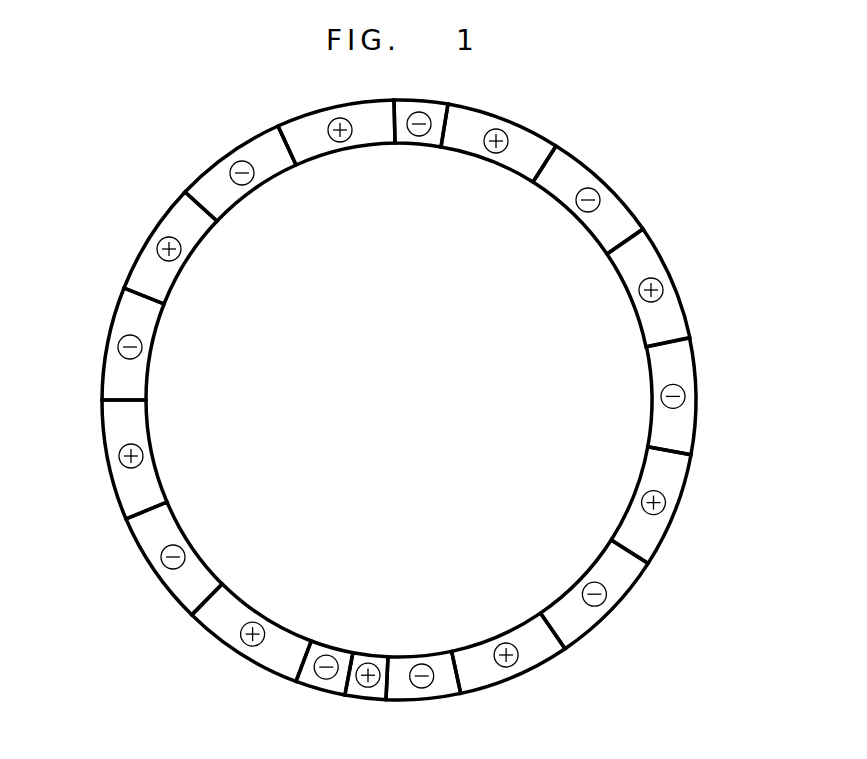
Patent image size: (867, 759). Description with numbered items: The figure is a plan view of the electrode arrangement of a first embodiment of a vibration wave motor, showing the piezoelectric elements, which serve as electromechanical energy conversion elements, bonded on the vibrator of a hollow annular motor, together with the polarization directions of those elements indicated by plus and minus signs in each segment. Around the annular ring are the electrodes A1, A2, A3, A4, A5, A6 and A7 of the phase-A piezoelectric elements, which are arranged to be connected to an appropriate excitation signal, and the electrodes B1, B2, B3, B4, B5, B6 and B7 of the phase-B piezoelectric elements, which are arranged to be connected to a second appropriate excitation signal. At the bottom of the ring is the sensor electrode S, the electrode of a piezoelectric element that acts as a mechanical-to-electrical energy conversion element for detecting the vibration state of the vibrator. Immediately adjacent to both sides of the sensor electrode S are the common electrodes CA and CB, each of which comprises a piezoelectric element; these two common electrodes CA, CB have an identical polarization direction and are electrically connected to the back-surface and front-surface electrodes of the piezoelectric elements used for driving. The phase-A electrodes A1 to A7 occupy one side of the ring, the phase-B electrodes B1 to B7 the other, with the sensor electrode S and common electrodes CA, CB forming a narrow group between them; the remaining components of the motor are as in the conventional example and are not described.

The electrode of phase-A piezoelectric element A1 is at (502, 163).
The electrode of phase-A piezoelectric element A2 is at (592, 217).
The electrode of phase-A piezoelectric element A3 is at (623, 270).
The electrode of phase-A piezoelectric element A4 is at (653, 372).
The electrode of phase-A piezoelectric element A5 is at (648, 472).
The electrode of phase-A piezoelectric element A6 is at (565, 603).
The electrode of phase-A piezoelectric element A7 is at (483, 648).
The electrode of phase-B piezoelectric element B1 is at (315, 152).
The electrode of phase-B piezoelectric element B2 is at (230, 198).
The electrode of phase-B piezoelectric element B3 is at (165, 280).
The electrode of phase-B piezoelectric element B4 is at (137, 373).
The electrode of phase-B piezoelectric element B5 is at (150, 480).
The electrode of phase-B piezoelectric element B6 is at (177, 532).
The electrode of phase-B piezoelectric element B7 is at (245, 612).
The common electrode CA is at (442, 650).
The common electrode CB is at (343, 652).
The sensor electrode S is at (395, 660).